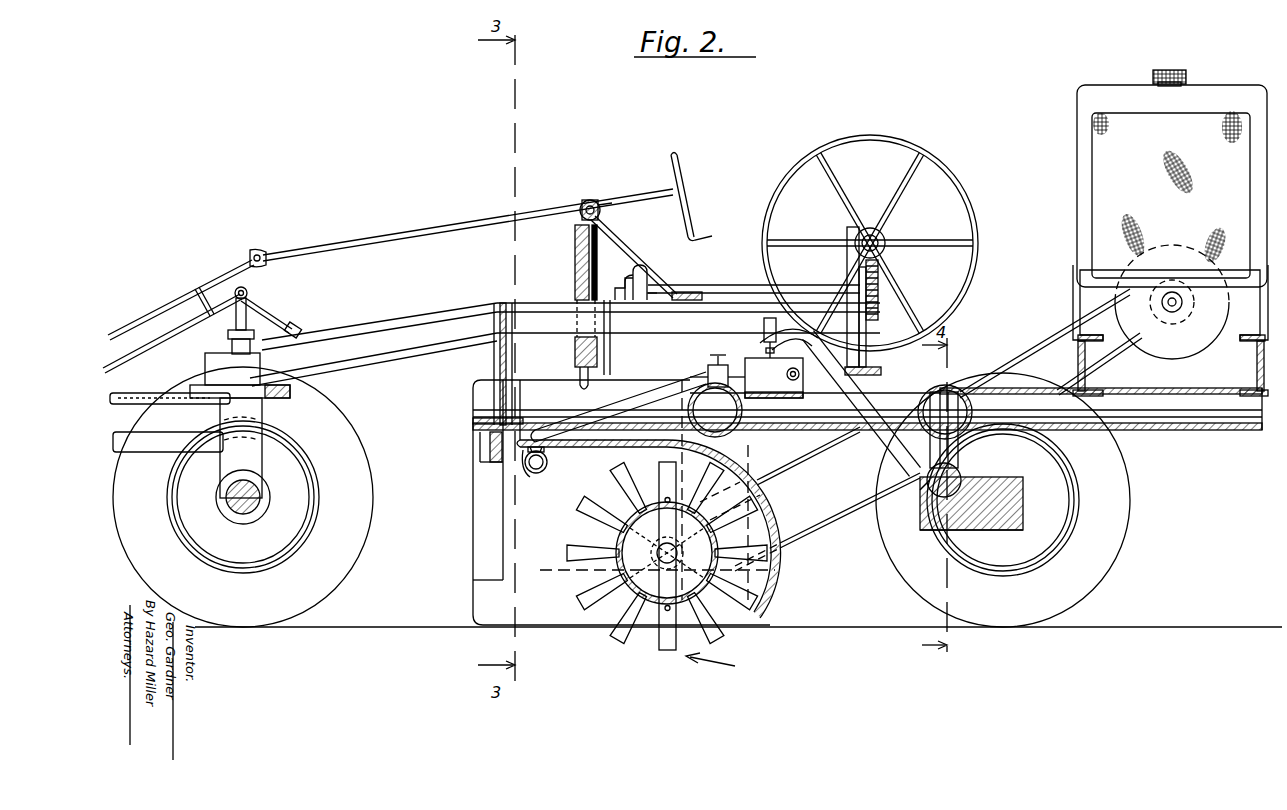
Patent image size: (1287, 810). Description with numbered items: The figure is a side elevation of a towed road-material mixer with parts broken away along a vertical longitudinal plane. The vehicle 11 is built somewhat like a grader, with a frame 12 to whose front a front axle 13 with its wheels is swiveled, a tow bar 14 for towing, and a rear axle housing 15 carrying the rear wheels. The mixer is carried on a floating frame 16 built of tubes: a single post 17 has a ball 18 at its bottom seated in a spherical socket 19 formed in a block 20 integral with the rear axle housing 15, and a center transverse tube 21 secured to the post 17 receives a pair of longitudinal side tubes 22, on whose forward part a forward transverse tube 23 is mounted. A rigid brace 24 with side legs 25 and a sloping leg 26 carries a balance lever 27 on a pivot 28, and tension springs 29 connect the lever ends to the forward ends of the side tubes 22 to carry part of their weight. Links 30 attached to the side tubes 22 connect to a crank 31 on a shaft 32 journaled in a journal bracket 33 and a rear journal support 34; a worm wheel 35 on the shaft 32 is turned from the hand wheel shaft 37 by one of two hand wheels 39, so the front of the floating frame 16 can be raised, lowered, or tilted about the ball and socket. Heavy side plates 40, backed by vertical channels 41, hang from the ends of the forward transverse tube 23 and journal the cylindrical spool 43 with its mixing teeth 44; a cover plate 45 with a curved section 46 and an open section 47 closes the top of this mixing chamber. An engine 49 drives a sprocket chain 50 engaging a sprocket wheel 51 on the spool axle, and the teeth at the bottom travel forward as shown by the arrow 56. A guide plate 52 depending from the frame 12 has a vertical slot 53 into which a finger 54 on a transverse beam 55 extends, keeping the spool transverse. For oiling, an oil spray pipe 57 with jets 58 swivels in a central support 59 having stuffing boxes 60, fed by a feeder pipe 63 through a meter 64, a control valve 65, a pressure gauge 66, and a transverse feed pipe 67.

The vehicle 11 is at (468, 205).
The frame 12 is at (398, 324).
The front axle 13 is at (262, 502).
The tow bar 14 is at (143, 355).
The rear axle housing 15 is at (1023, 504).
The floating frame 16 is at (838, 455).
The post 17 is at (958, 458).
The ball 18 is at (944, 480).
The spherical socket 19 is at (928, 497).
The block 20 is at (933, 531).
The center transverse tube 21 is at (950, 386).
The longitudinal side tubes 22 is at (867, 409).
The forward transverse tube 23 is at (730, 437).
The rigid brace 24 is at (636, 250).
The side legs 25 is at (575, 263).
The sloping leg 26 is at (652, 278).
The balance lever 27 is at (582, 205).
The pivot 28 is at (604, 203).
The tension springs 29 is at (575, 286).
The links 30 is at (610, 368).
The crank 31 is at (613, 290).
The shaft 32 is at (730, 287).
The journal bracket 33 is at (635, 275).
The rear journal support 34 is at (880, 286).
The worm wheel 35 is at (872, 312).
The hand wheel shaft 37 is at (880, 238).
The hand wheels 39 is at (960, 188).
The side plates 40 is at (621, 502).
The vertical channels 41 is at (751, 498).
The cylindrical spool 43 is at (720, 580).
The mixing teeth 44 is at (628, 612).
The cover plate 45 is at (649, 529).
The curved section 46 is at (808, 456).
The open section 47 is at (768, 583).
The engine 49 is at (1068, 203).
The sprocket chain 50 is at (1020, 352).
The sprocket wheel 51 is at (657, 490).
The guide plate 52 is at (500, 347).
The vertical slot 53 is at (508, 395).
The finger 54 is at (497, 420).
The transverse beam 55 is at (490, 447).
The arrow 56 is at (710, 666).
The oil spray pipe 57 is at (530, 474).
The jets 58 is at (543, 474).
The central support 59 is at (524, 466).
The stuffing boxes 60 is at (548, 470).
The feeder pipe 63 is at (632, 396).
The meter 64 is at (774, 378).
The control valve 65 is at (718, 364).
The pressure gauge 66 is at (764, 324).
The transverse feed pipe 67 is at (798, 372).